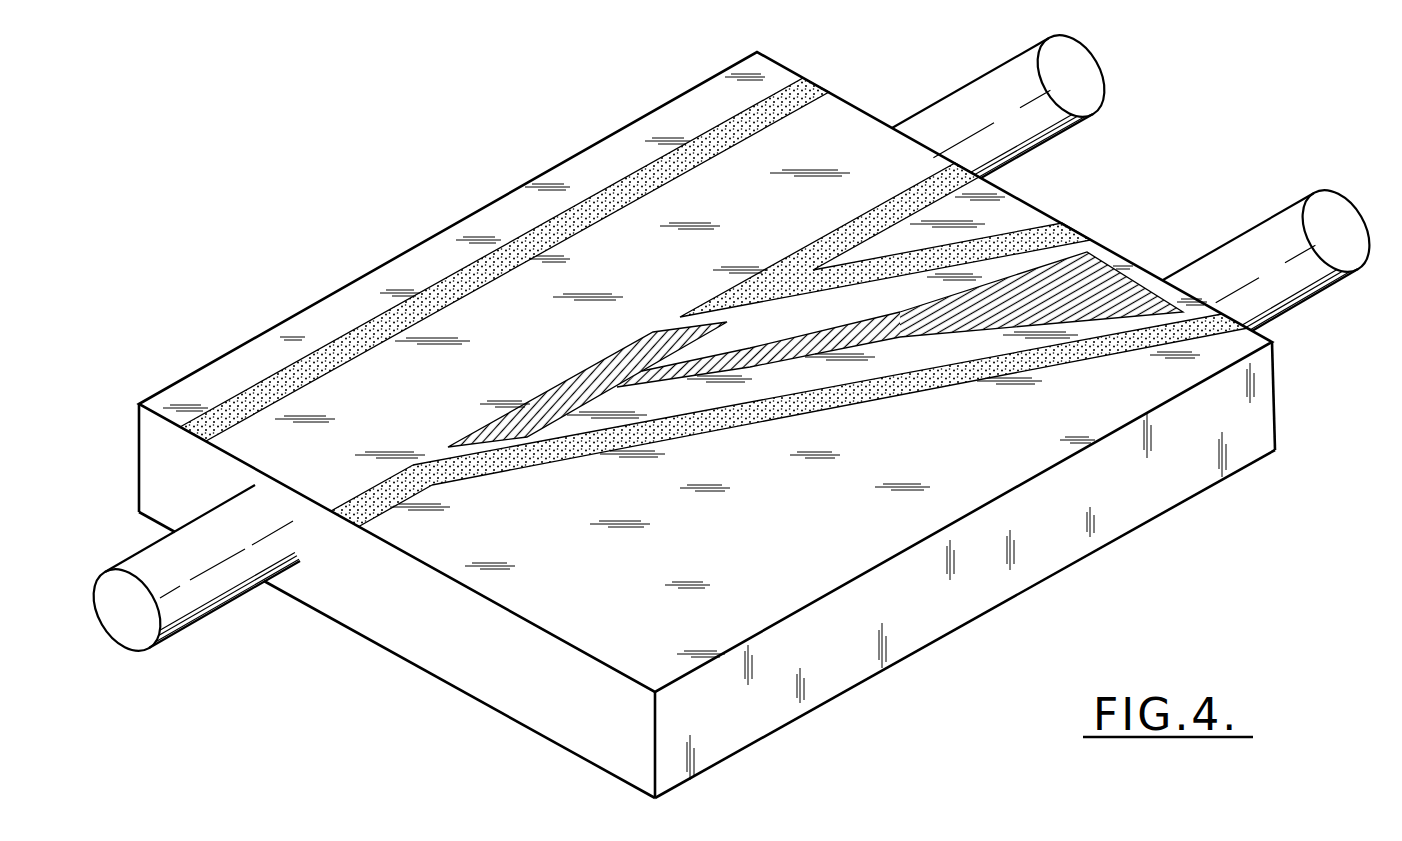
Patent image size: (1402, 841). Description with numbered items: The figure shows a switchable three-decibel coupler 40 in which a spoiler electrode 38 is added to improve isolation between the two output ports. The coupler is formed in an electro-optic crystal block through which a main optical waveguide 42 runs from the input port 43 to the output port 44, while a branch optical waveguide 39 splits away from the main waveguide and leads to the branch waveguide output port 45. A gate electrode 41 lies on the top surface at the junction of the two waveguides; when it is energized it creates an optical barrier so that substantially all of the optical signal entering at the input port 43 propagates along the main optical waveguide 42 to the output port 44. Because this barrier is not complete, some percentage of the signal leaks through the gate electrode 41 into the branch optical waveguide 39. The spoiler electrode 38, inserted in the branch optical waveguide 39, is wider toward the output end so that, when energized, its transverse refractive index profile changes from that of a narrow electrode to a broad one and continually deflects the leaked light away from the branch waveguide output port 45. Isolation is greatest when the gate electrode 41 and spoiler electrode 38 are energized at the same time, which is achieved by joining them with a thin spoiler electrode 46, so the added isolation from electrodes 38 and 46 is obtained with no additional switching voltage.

The spoiler electrode 38 is at (1100, 258).
The branch optical waveguide 39 is at (900, 362).
The switchable 3 dB coupler 40 is at (538, 96).
The gate electrode 41 is at (577, 375).
The main optical waveguide 42 is at (467, 315).
The input port 43 is at (295, 492).
The output port 44 is at (917, 131).
The branch waveguide output port 45 is at (1187, 292).
The thin spoiler electrode 46 is at (783, 340).